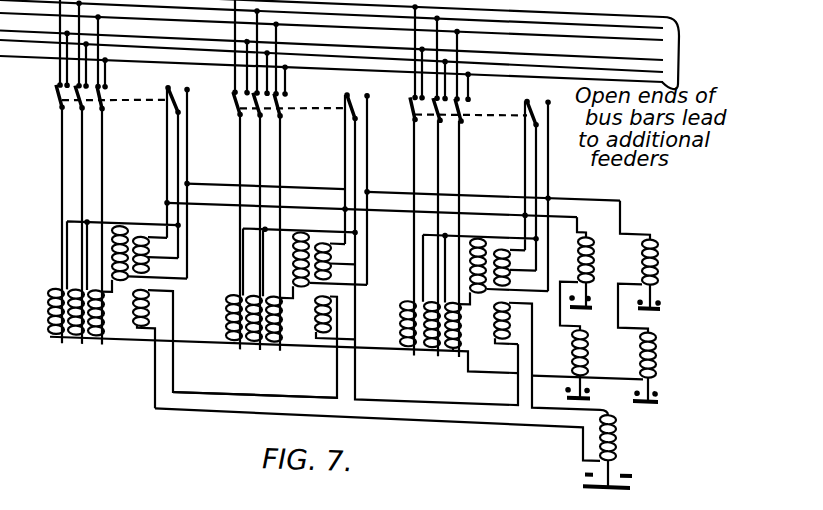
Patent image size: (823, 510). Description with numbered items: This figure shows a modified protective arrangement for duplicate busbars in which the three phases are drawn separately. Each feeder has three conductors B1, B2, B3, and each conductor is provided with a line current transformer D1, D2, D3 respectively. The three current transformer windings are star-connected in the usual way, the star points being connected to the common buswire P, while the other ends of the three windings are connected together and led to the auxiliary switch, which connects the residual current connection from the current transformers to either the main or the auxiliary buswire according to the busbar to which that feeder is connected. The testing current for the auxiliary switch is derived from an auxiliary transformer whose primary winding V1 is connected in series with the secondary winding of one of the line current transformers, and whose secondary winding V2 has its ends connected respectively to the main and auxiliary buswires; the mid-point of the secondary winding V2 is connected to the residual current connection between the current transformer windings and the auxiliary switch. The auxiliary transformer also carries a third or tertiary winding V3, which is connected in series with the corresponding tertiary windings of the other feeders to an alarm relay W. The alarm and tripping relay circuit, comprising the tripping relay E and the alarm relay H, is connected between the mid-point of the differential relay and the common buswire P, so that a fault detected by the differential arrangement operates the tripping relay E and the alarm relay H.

The feeder conductor B1 is at (239, 178).
The feeder conductor B2 is at (260, 179).
The feeder conductor B3 is at (282, 187).
The line current transformer D1 is at (223, 341).
The line current transformer D2 is at (246, 348).
The line current transformer D3 is at (269, 357).
The primary winding of auxiliary transformer V1 is at (300, 223).
The secondary winding of auxiliary transformer V2 is at (326, 220).
The tertiary winding of auxiliary transformer V3 is at (311, 338).
The tripping relay E is at (610, 253).
The alarm relay H is at (600, 365).
The alarm relay W is at (620, 451).
The common buswire P is at (436, 318).